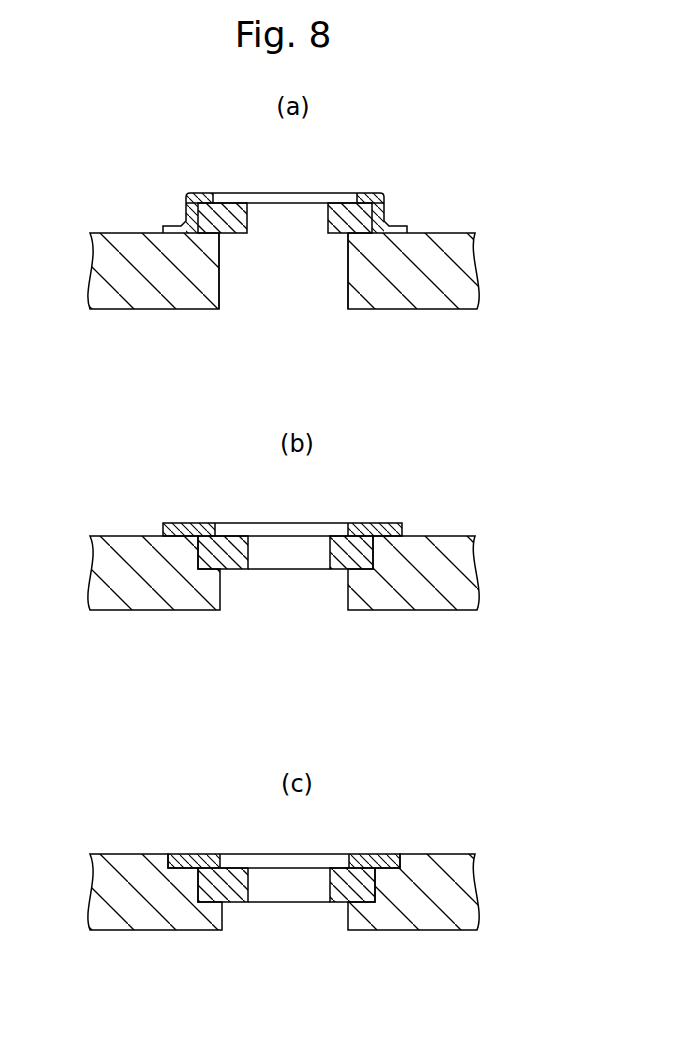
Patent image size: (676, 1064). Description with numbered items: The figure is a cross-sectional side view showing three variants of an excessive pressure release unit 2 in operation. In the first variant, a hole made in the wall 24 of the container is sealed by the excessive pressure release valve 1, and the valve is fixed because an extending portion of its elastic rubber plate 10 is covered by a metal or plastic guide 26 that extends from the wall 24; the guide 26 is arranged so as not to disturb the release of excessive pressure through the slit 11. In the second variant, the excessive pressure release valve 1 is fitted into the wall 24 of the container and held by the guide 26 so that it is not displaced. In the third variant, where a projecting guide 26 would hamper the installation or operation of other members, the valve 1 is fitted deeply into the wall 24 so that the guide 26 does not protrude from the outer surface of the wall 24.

The excessive pressure release valve 1 is at (277, 514).
The excessive pressure release unit 2 is at (386, 326).
The elastic rubber plate 10 is at (231, 204).
The slit 11 is at (276, 232).
The wall of the container 24 is at (447, 246).
The guide 26 is at (189, 216).